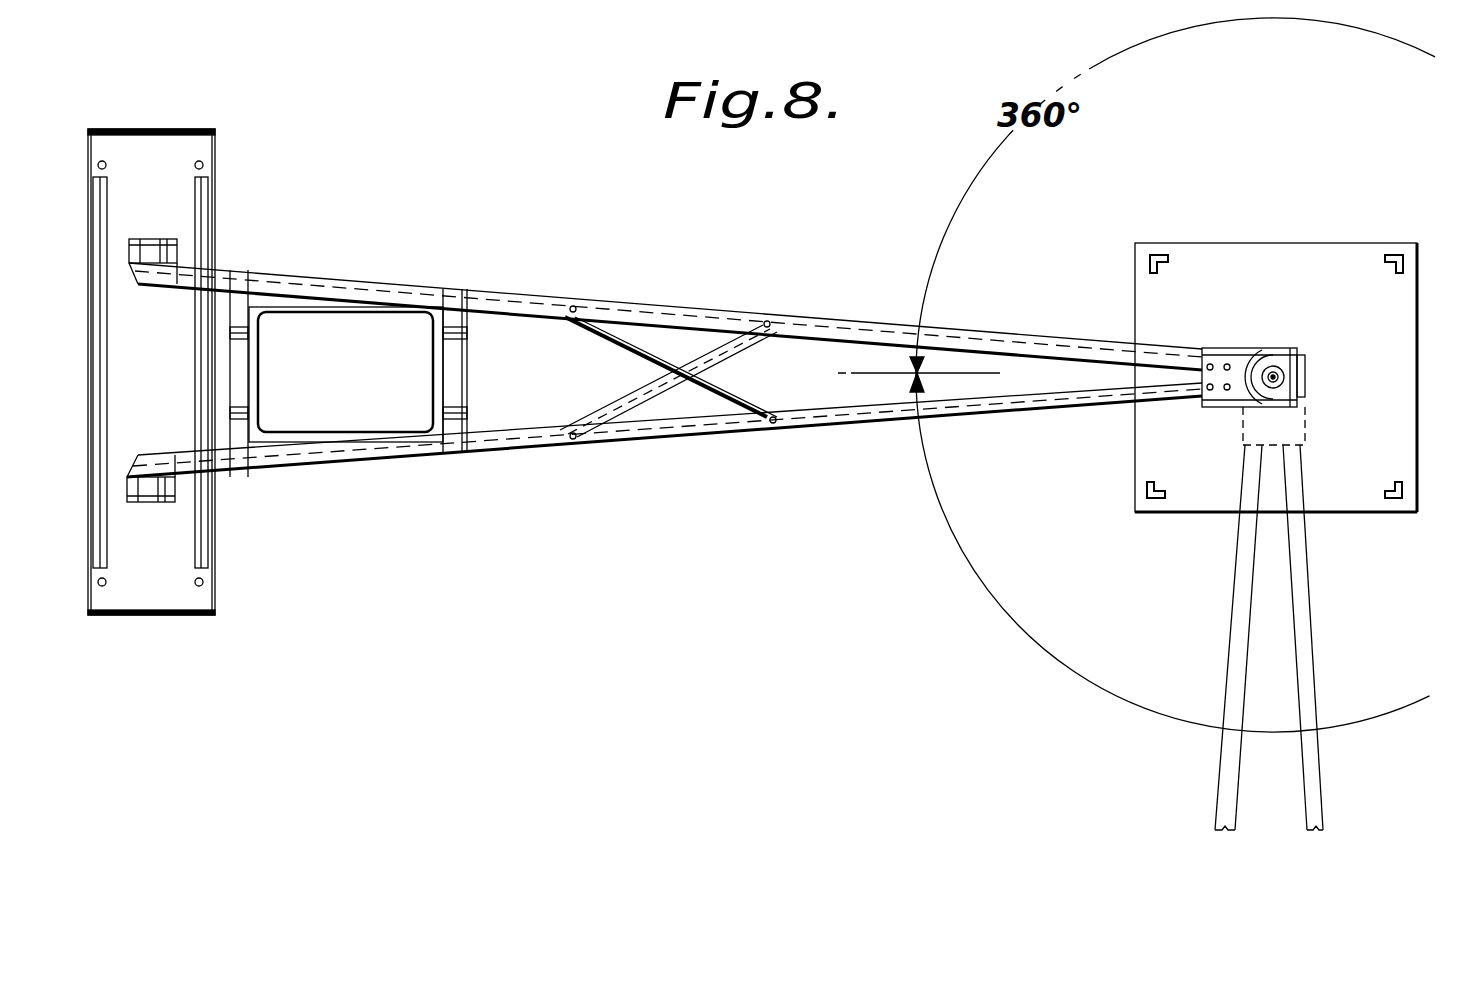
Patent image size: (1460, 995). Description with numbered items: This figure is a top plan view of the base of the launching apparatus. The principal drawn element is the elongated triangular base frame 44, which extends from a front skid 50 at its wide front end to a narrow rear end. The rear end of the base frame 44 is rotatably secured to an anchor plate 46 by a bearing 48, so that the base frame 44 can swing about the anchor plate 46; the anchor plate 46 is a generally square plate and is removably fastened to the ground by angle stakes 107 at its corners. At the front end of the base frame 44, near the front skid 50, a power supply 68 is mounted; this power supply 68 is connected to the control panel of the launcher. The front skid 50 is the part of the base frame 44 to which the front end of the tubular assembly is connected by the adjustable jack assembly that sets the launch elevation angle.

The base frame 44 is at (840, 415).
The anchor plate 46 is at (1343, 512).
The bearing 48 is at (1306, 375).
The front skid 50 is at (173, 586).
The power supply 68 is at (357, 387).
The angle stakes 107 is at (1385, 267).